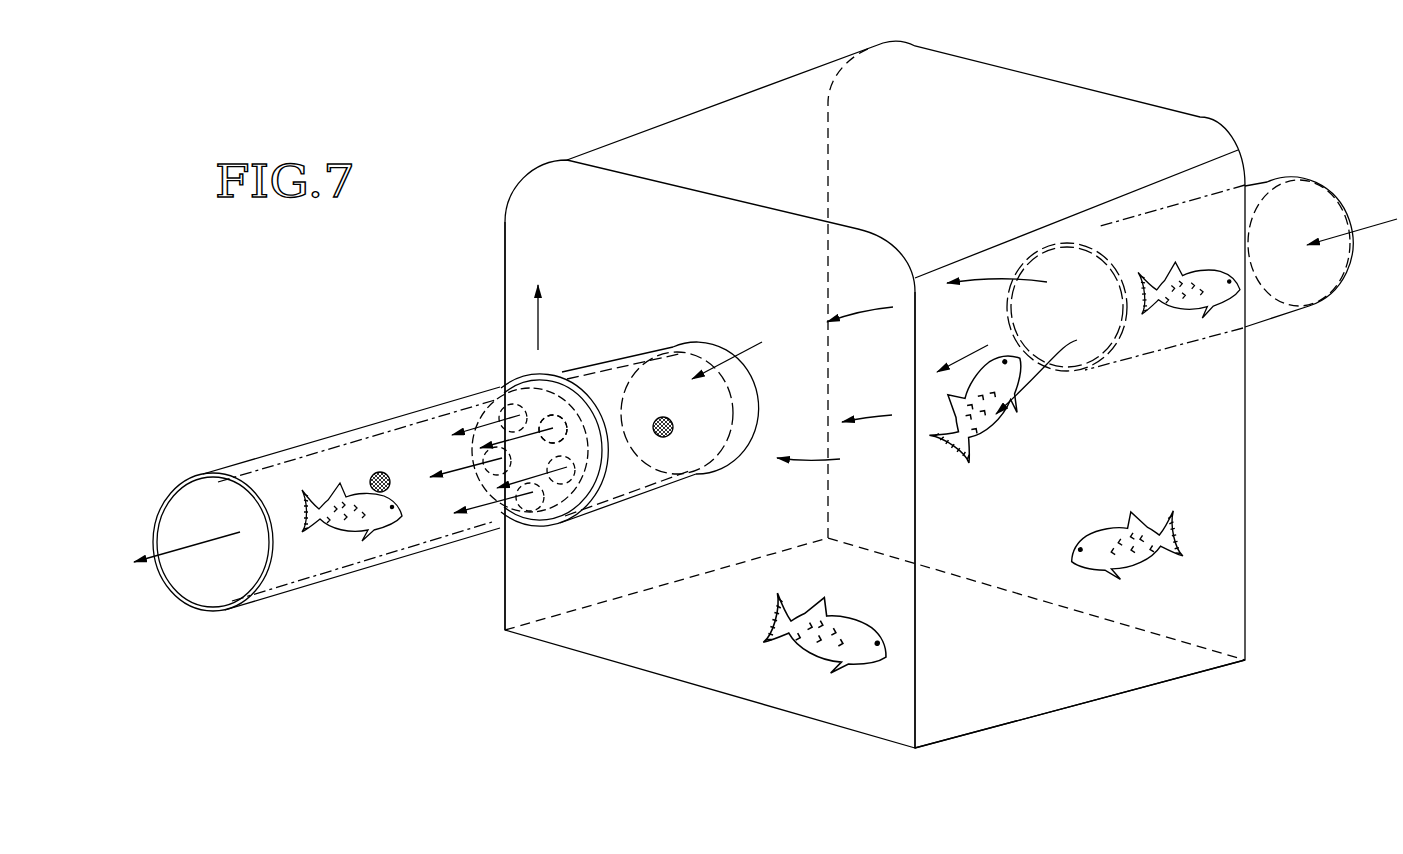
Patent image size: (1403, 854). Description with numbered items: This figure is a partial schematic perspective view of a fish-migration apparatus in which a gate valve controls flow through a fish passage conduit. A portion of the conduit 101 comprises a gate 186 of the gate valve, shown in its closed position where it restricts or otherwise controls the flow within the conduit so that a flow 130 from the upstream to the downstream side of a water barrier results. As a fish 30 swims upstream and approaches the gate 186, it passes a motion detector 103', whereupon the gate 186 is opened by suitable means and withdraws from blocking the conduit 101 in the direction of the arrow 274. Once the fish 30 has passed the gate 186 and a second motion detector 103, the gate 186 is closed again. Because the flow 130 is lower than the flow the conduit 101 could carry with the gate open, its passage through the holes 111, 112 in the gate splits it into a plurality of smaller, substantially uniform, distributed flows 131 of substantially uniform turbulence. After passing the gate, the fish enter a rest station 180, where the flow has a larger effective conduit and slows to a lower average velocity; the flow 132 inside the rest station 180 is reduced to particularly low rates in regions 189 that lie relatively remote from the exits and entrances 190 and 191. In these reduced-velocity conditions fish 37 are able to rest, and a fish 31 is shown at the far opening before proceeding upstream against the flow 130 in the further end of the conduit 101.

The fish 30 is at (360, 530).
The fish exiting tube 31 is at (1180, 306).
The fish 37 is at (818, 632).
The conduit 101 is at (295, 575).
The motion detector 103 is at (389, 430).
The motion detector 103' is at (683, 477).
The holes 111 is at (548, 412).
The light detector 112 is at (553, 429).
The flow 130 is at (180, 553).
The distributed flows 131 is at (470, 512).
The flow 132 is at (742, 344).
The rest station 180 is at (1037, 93).
The gate 186 is at (560, 526).
The regions 189 is at (582, 184).
The exit and entrance 190 is at (690, 360).
The exit and entrance 191 is at (1107, 252).
The arrow 274 is at (544, 304).